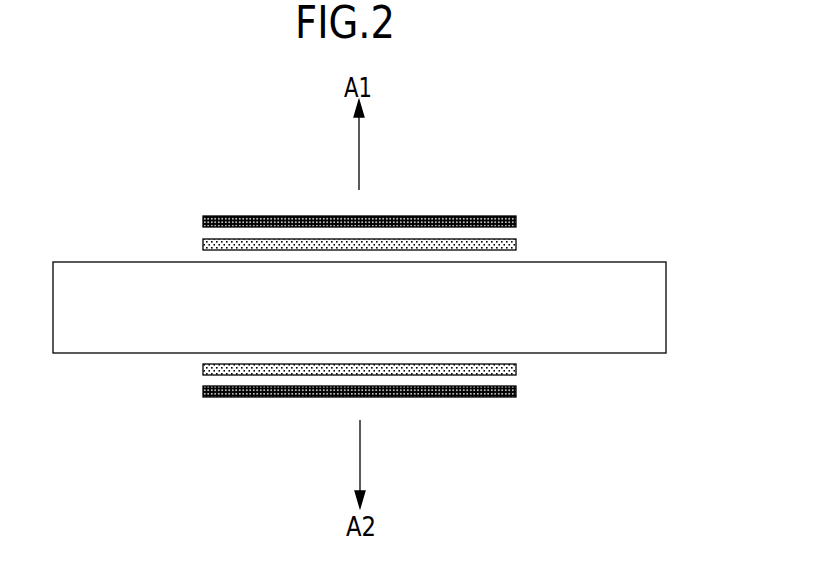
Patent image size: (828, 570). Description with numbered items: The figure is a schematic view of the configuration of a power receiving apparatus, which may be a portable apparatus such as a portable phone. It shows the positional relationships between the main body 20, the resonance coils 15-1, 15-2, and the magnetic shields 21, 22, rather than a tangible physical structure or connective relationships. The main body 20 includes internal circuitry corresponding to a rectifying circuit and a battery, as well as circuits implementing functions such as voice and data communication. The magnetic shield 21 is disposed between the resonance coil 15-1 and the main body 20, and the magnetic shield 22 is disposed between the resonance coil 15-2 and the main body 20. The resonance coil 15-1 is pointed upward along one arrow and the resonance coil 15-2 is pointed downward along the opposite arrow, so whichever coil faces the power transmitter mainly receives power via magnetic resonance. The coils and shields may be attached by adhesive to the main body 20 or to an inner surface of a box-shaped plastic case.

The main body 20 is at (666, 312).
The resonance coil 15-1 is at (505, 216).
The resonance coil 15-2 is at (455, 397).
The magnetic shield 21 is at (516, 241).
The magnetic shield 22 is at (516, 371).